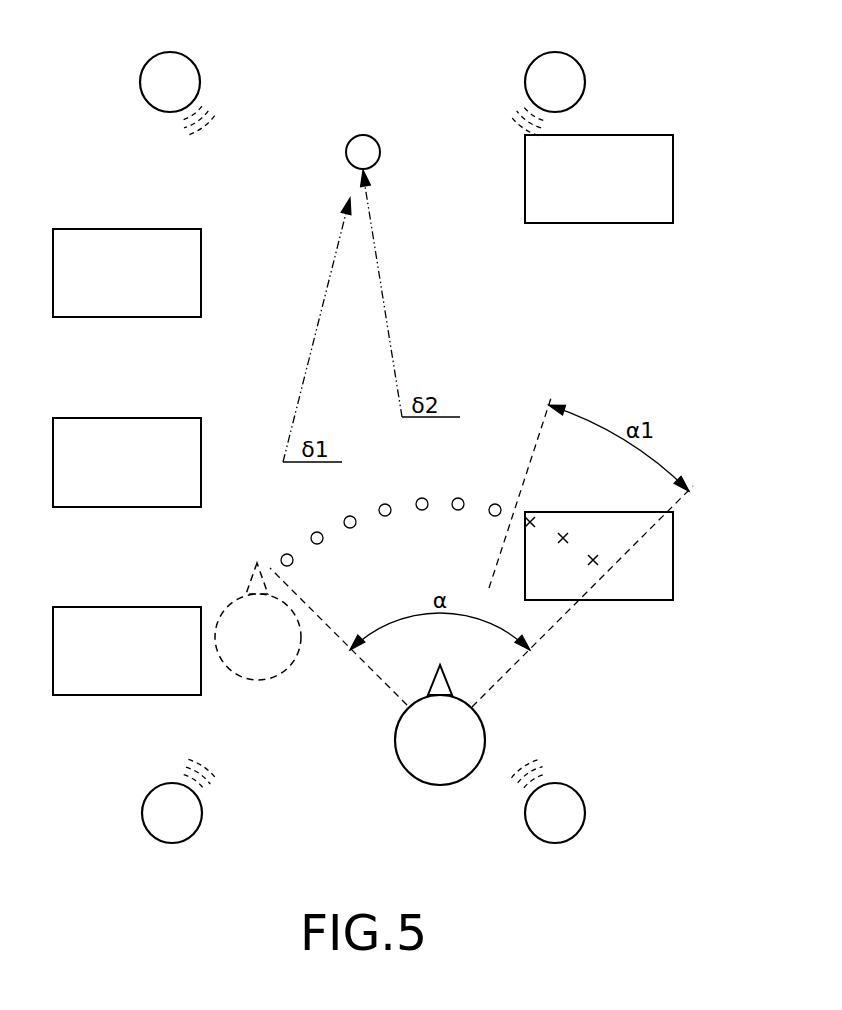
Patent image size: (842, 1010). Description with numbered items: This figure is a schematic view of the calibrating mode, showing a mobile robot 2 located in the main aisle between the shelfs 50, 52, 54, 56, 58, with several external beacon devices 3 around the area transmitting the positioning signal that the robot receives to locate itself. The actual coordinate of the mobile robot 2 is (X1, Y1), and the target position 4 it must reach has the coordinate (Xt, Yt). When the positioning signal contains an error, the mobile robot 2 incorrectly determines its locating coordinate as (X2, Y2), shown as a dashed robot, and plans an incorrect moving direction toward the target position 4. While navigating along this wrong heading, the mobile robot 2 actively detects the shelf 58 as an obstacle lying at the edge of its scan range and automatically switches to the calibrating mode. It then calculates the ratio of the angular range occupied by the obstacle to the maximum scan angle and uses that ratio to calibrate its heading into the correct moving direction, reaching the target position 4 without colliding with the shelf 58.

The mobile robot 2 is at (481, 738).
The external beacon device 3 is at (170, 58).
The target position 4 is at (373, 152).
The shelf 50 is at (126, 235).
The shelf 52 is at (126, 424).
The shelf 54 is at (127, 612).
The shelf 56 is at (600, 140).
The shelf 58 is at (668, 557).